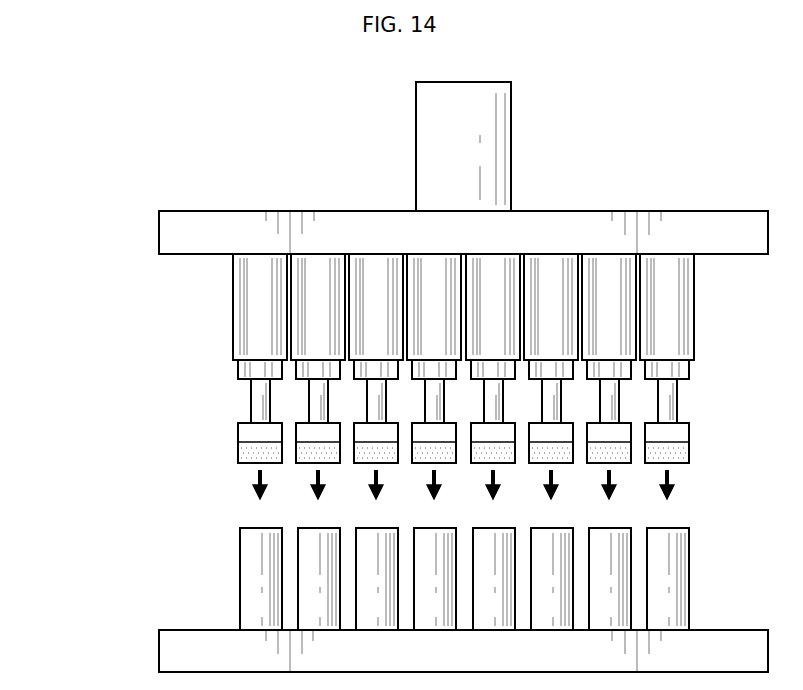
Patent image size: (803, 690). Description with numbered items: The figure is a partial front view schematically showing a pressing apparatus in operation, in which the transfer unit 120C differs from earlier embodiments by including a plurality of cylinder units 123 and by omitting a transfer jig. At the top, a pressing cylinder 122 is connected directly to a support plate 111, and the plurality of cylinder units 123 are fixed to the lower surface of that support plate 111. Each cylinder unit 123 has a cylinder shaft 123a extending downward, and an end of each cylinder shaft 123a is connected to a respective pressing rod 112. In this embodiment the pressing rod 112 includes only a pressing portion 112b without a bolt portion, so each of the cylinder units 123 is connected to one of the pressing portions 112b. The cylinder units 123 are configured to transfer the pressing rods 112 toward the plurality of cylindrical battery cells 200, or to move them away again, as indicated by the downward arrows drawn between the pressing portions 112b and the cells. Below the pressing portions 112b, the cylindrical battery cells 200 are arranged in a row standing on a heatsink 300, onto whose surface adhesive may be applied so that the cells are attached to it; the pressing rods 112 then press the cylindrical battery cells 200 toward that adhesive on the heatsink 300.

The support plate 111 is at (198, 216).
The pressing cylinder 122 is at (416, 121).
The transfer unit 120C is at (359, 358).
The cylinder unit 123 is at (304, 327).
The cylinder shaft 123a is at (253, 390).
The pressing rod 112 is at (357, 443).
The pressing portion 112b is at (212, 442).
The cylindrical battery cell 200 is at (211, 562).
The heatsink 300 is at (198, 632).